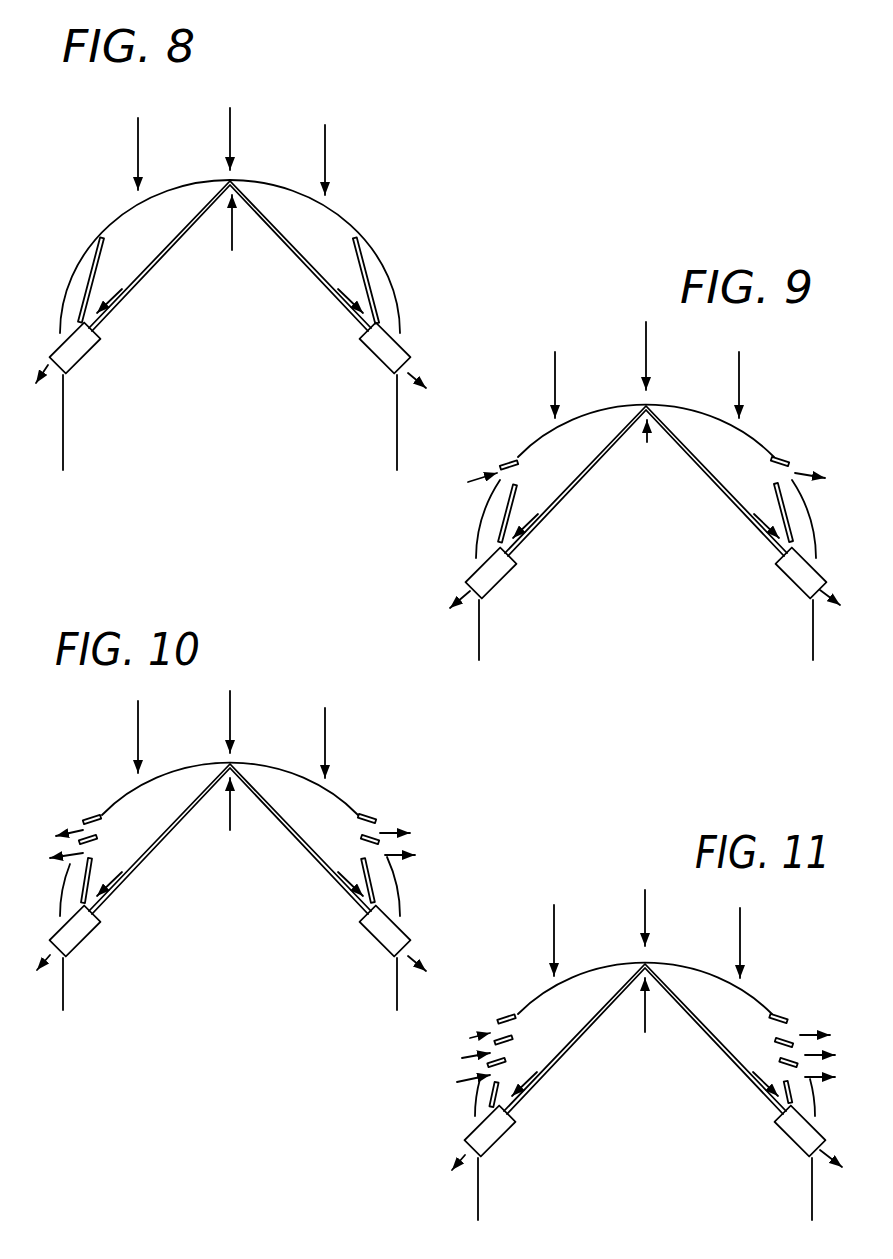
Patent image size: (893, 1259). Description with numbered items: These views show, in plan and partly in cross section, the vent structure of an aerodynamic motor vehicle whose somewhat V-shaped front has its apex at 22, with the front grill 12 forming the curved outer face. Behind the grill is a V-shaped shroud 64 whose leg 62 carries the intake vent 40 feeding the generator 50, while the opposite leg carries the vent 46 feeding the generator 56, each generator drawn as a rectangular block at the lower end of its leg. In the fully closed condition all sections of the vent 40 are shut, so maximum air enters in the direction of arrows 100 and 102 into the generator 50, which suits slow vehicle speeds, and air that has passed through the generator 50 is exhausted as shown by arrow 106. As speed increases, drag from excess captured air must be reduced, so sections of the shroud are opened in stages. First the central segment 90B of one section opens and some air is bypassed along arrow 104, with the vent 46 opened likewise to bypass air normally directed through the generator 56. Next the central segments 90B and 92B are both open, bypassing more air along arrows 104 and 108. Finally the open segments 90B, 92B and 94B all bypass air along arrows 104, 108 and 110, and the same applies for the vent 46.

In FIG. 8, the front grill 12 is at (230, 228).
In FIG. 9, the front grill 12 is at (646, 448).
In FIG. 10, the front grill 12 is at (230, 807).
In FIG. 11, the front grill 12 is at (645, 1010).
In FIG. 8, the apex of the V 22 is at (257, 144).
In FIG. 8, the intake vent 40 is at (78, 246).
In FIG. 8, the vent 46 is at (394, 261).
In FIG. 9, the vent 46 is at (670, 513).
In FIG. 11, the vent 46 is at (668, 1104).
In FIG. 8, the generator 50 is at (107, 358).
In FIG. 9, the generator 50 is at (511, 585).
In FIG. 10, the generator 50 is at (102, 937).
In FIG. 11, the generator 50 is at (505, 1147).
In FIG. 8, the generator 56 is at (417, 334).
In FIG. 9, the generator 56 is at (778, 585).
In FIG. 11, the generator 56 is at (770, 1147).
In FIG. 8, the leg of V-shaped shroud 62 is at (230, 257).
In FIG. 9, the leg of V-shaped shroud 62 is at (646, 481).
In FIG. 10, the leg of V-shaped shroud 62 is at (230, 839).
In FIG. 11, the leg of V-shaped shroud 62 is at (645, 1043).
In FIG. 8, the V-shaped shroud 64 is at (249, 243).
In FIG. 9, the V-shaped shroud 64 is at (663, 456).
In FIG. 10, the V-shaped shroud 64 is at (248, 815).
In FIG. 11, the V-shaped shroud 64 is at (661, 1019).
In FIG. 9, the central segment 90B is at (624, 434).
In FIG. 10, the central segment 90B is at (222, 791).
In FIG. 11, the central segment 90B is at (636, 988).
In FIG. 10, the central segment 92B is at (229, 824).
In FIG. 11, the central segment 92B is at (624, 983).
In FIG. 11, the open segment 94B is at (642, 1040).
In FIG. 8, the arrow 100 is at (173, 135).
In FIG. 8, the arrow 102 is at (130, 273).
In FIG. 9, the arrow 104 is at (618, 464).
In FIG. 10, the arrow 104 is at (220, 782).
In FIG. 11, the arrow 104 is at (615, 1024).
In FIG. 8, the arrow 106 is at (231, 400).
In FIG. 9, the arrow 106 is at (609, 584).
In FIG. 10, the arrow 106 is at (231, 982).
In FIG. 11, the arrow 106 is at (610, 1184).
In FIG. 10, the arrow 108 is at (232, 843).
In FIG. 11, the arrow 108 is at (610, 1069).
In FIG. 11, the arrow 110 is at (610, 1102).